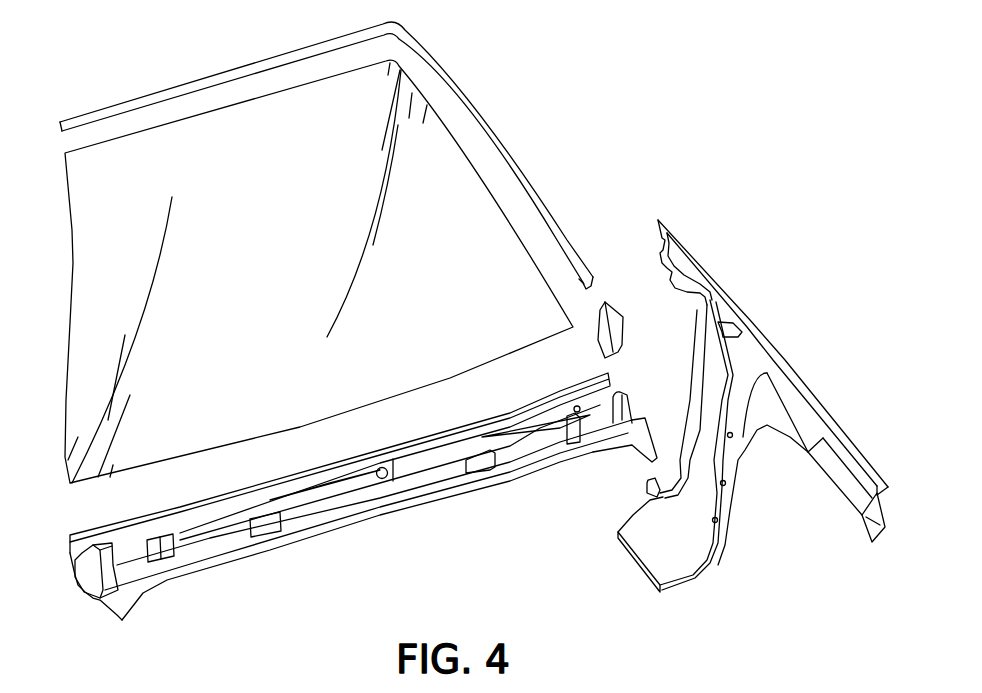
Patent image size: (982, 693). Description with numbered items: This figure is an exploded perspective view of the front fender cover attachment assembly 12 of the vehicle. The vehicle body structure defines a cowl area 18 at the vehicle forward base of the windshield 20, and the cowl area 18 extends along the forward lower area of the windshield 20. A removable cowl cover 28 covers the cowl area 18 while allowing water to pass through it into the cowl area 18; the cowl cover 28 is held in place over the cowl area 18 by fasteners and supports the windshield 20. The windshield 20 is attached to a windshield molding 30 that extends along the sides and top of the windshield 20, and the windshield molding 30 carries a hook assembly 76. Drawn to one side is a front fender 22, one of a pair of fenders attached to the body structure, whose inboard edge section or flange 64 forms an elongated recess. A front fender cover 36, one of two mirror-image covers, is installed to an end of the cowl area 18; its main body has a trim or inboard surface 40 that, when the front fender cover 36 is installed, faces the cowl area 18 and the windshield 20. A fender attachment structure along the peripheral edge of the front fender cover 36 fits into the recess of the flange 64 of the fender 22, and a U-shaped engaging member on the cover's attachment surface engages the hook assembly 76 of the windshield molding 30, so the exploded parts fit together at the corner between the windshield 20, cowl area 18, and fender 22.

The front fender cover attachment assembly 12 is at (666, 170).
The cowl area 18 is at (440, 528).
The windshield 20 is at (118, 274).
The front fender 22 is at (824, 403).
The cowl cover 28 is at (221, 566).
The windshield molding 30 is at (122, 96).
The front fender cover 36 is at (600, 308).
The trim surface 40 is at (601, 334).
The flange 64 is at (678, 263).
The hook assembly 76 is at (596, 266).